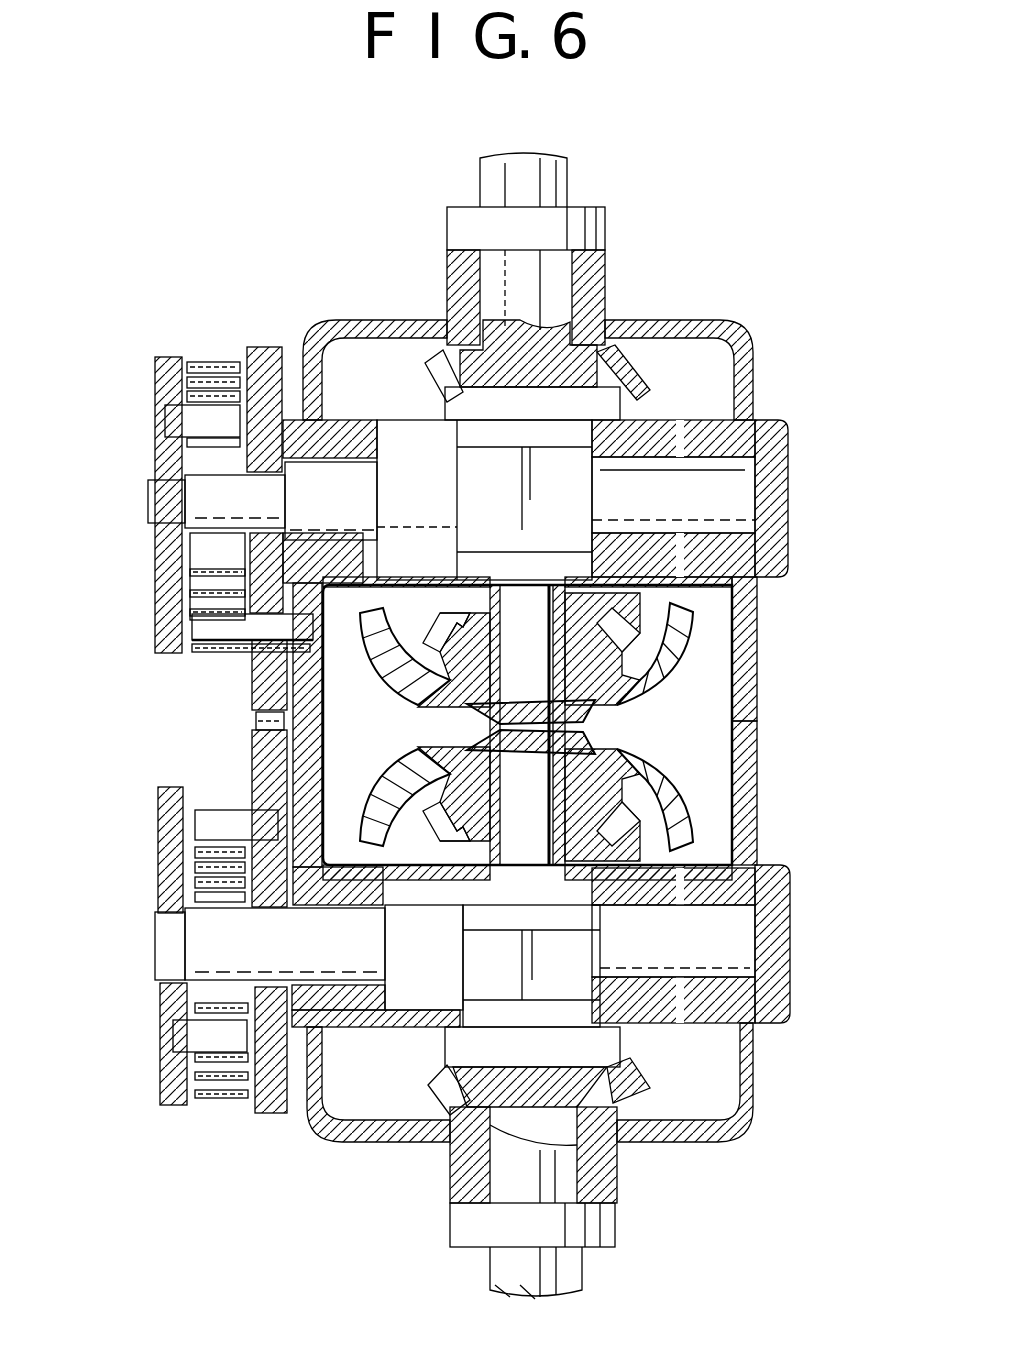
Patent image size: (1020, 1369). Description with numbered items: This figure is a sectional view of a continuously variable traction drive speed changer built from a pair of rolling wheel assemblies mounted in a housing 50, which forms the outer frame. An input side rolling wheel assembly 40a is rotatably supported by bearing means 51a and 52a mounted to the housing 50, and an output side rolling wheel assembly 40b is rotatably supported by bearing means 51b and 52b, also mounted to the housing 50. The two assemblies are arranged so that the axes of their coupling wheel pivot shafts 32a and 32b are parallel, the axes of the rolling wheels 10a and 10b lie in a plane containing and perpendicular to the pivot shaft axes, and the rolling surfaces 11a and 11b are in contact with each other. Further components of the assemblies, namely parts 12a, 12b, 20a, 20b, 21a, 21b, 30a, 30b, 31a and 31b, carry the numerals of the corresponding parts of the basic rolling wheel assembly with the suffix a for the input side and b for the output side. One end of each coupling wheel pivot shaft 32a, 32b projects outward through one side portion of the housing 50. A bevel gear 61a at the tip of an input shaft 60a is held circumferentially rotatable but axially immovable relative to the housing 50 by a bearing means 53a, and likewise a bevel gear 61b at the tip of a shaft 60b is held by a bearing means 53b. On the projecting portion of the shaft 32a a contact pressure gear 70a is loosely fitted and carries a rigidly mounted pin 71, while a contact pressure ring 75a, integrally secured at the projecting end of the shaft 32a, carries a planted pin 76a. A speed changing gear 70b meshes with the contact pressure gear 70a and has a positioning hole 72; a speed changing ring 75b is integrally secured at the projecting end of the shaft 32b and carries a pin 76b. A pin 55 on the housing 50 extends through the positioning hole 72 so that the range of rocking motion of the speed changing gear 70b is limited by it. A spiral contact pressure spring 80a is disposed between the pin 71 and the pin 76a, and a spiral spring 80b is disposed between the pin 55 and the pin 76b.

The rolling wheel 10a is at (742, 842).
The rolling wheel 10b is at (742, 612).
The rolling surface 11a is at (700, 770).
The rolling surface 11b is at (700, 660).
The gear teeth segment 12a is at (700, 800).
The gear teeth segment 12b is at (700, 640).
The cover 20a is at (655, 1023).
The cover 20b is at (735, 362).
The bevel gear 21a is at (630, 1080).
The bevel gear 21b is at (640, 345).
The hub 30a is at (492, 1032).
The hub 30b is at (440, 372).
The cone 31a is at (595, 742).
The cone 31b is at (595, 700).
The coupling wheel pivot shaft 32a is at (205, 958).
The coupling wheel pivot shaft 32b is at (200, 486).
The rolling wheel assembly 40a is at (642, 932).
The rolling wheel assembly 40b is at (662, 494).
The housing 50 is at (757, 730).
The bearing means 51a is at (318, 1060).
The bearing means 51b is at (345, 447).
The bearing means 52a is at (765, 1015).
The bearing means 52b is at (765, 420).
The bearing means 53a is at (598, 1160).
The bearing means 53b is at (606, 272).
The pin 55 is at (240, 636).
The input shaft 60a is at (485, 1270).
The input shaft 60b is at (568, 184).
The bevel gear 61a is at (445, 1082).
The bevel gear 61b is at (430, 378).
The contact pressure gear 70a is at (268, 760).
The speed changing gear 70b is at (262, 690).
The pin 71 is at (210, 822).
The positioning hole 72 is at (220, 657).
The contact pressure ring 75a is at (175, 1092).
The speed changing ring 75b is at (165, 368).
The pin 76a is at (218, 1040).
The pin 76b is at (212, 420).
The spiral contact pressure spring 80a is at (205, 870).
The spiral contact pressure spring 80b is at (205, 562).